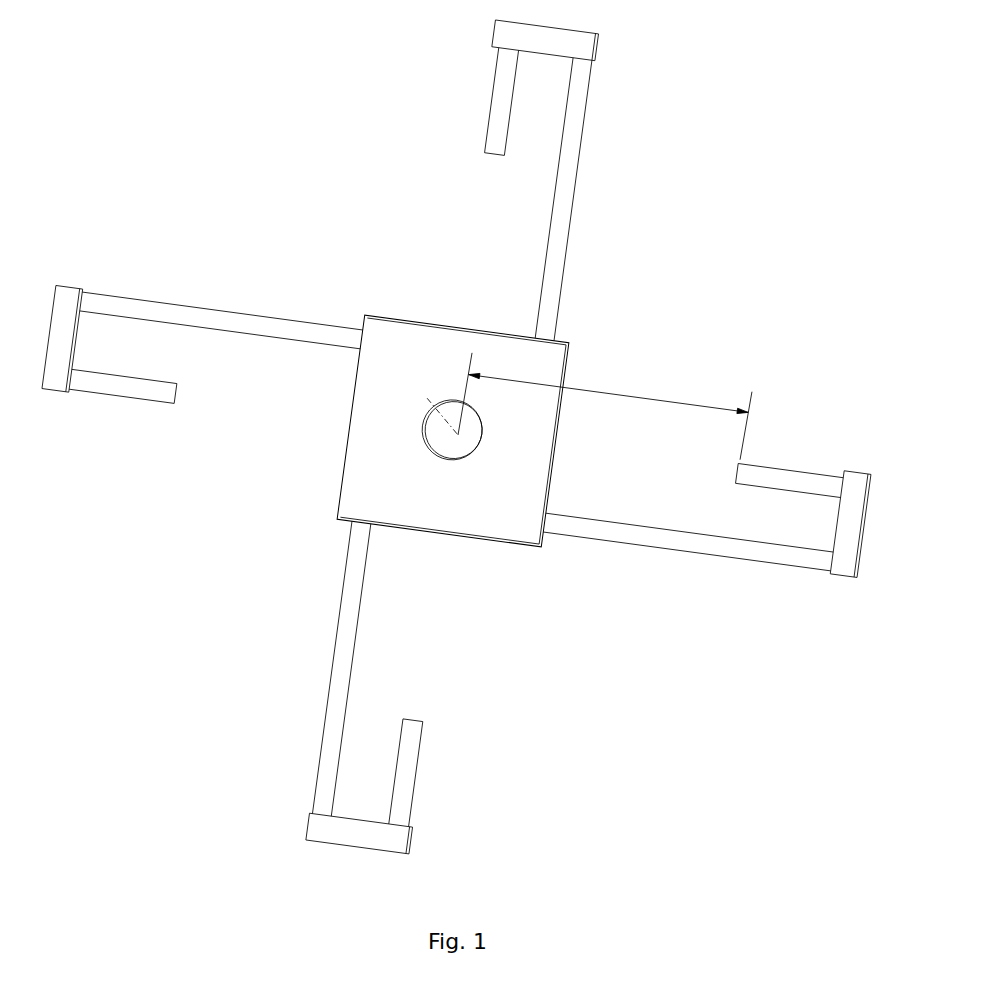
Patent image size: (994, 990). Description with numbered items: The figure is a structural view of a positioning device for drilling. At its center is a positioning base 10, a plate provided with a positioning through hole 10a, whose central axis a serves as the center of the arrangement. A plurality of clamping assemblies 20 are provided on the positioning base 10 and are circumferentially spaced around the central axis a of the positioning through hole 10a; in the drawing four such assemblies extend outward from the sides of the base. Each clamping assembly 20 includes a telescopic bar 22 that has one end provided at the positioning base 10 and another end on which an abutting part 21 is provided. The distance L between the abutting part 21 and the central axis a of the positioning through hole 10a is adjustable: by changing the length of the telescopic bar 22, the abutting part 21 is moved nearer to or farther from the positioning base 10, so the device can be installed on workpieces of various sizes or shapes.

The positioning base 10 is at (495, 492).
The positioning through hole 10a is at (420, 438).
The clamping assemblies 20 is at (462, 454).
The abutting part 21 is at (465, 88).
The telescopic bar 22 is at (552, 240).
The central axis a is at (432, 397).
The distance L is at (605, 412).